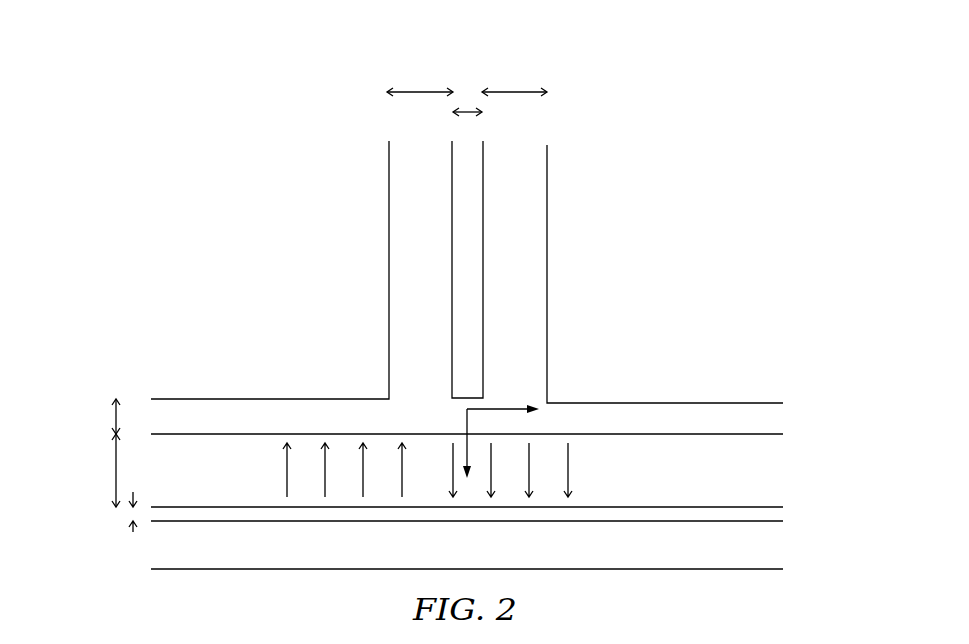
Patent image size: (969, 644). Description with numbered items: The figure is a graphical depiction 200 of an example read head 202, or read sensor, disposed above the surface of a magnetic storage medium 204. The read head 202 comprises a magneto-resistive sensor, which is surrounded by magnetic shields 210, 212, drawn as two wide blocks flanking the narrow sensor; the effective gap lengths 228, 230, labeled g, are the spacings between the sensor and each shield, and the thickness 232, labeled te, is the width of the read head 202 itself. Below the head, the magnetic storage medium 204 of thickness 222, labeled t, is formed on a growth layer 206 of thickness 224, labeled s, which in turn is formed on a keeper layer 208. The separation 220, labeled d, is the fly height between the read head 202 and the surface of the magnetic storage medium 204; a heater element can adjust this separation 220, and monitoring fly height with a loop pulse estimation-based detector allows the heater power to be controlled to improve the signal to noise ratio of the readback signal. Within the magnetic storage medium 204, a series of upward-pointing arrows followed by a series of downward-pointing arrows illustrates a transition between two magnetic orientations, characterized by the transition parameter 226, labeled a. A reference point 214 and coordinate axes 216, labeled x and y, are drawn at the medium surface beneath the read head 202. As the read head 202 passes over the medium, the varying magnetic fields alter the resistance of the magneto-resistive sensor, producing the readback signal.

The magnetic recording system 200 is at (192, 56).
The read head 202 is at (483, 268).
The magnetic storage medium 204 is at (780, 470).
The growth layer 206 is at (780, 513).
The keeper layer 208 is at (780, 545).
The magnetic shield 210 is at (388, 192).
The magnetic shield 212 is at (547, 195).
The origin of coordinate system 214 is at (464, 419).
The coordinate axes 216 is at (498, 407).
The separation 220 is at (113, 420).
The thickness 222 is at (113, 452).
The thickness 224 is at (137, 513).
The transition parameter 226 is at (420, 488).
The effective gap length 228 is at (420, 91).
The effective gap length 230 is at (517, 91).
The thickness 232 is at (467, 111).